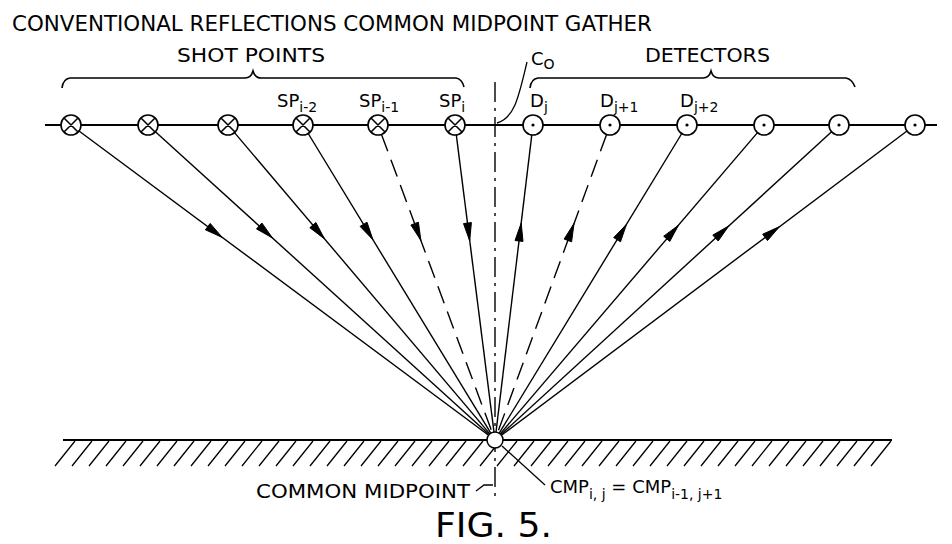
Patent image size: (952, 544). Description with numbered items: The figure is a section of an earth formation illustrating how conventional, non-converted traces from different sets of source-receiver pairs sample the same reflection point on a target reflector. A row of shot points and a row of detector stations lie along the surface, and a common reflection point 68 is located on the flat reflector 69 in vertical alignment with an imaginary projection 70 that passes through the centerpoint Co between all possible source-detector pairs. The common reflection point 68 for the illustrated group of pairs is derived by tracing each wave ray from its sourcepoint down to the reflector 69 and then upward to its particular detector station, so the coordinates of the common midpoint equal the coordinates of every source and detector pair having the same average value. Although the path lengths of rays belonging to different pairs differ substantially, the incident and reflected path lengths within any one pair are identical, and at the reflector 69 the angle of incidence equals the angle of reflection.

The common reflection point 68 is at (500, 434).
The flat reflector 69 is at (732, 453).
The imaginary projection 70 is at (496, 178).